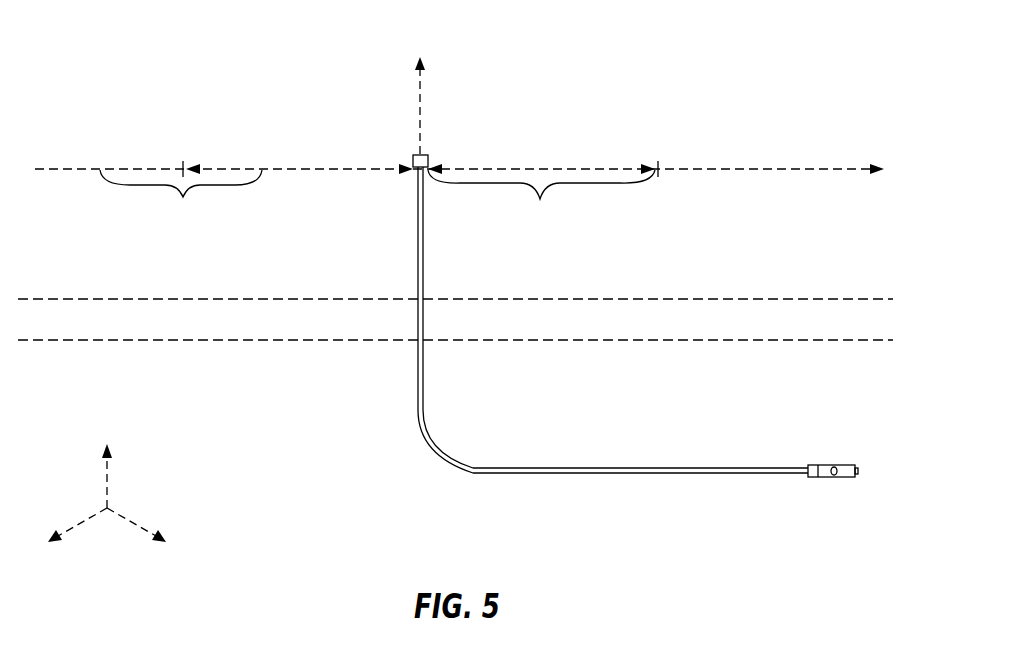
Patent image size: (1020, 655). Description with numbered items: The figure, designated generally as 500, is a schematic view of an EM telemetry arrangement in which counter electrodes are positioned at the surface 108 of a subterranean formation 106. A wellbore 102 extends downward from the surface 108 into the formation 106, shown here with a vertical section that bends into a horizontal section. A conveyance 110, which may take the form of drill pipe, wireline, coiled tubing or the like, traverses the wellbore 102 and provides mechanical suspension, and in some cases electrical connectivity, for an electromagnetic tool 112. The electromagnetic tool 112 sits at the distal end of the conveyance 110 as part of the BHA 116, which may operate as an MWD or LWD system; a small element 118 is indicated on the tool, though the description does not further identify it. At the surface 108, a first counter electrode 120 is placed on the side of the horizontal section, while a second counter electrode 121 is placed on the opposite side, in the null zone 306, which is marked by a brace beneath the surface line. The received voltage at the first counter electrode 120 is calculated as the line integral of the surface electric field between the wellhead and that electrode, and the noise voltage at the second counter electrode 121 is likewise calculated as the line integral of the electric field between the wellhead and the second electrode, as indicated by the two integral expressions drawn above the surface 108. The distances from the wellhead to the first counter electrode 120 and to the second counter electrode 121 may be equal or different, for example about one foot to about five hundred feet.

The electric field measurement configuration 500 is at (125, 50).
The wellbore 102 is at (426, 241).
The subterranean formation 106 is at (731, 249).
The surface 108 is at (754, 168).
The conveyance 110 is at (424, 385).
The electromagnetic tool 112 is at (850, 465).
The BHA 116 is at (724, 462).
The electrode sensor 118 is at (835, 464).
The first counter electrode 120 is at (661, 166).
The second counter electrode 121 is at (181, 166).
The null zone 306 is at (183, 197).